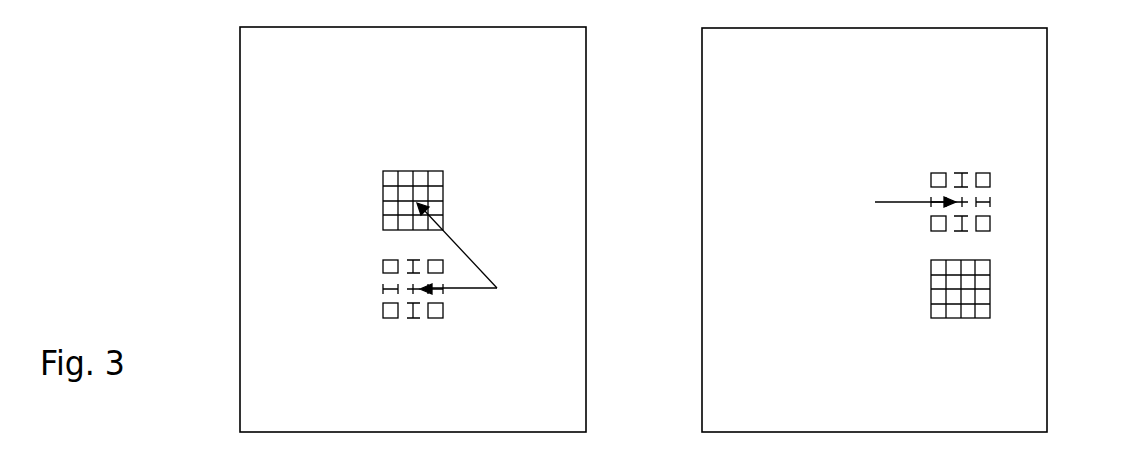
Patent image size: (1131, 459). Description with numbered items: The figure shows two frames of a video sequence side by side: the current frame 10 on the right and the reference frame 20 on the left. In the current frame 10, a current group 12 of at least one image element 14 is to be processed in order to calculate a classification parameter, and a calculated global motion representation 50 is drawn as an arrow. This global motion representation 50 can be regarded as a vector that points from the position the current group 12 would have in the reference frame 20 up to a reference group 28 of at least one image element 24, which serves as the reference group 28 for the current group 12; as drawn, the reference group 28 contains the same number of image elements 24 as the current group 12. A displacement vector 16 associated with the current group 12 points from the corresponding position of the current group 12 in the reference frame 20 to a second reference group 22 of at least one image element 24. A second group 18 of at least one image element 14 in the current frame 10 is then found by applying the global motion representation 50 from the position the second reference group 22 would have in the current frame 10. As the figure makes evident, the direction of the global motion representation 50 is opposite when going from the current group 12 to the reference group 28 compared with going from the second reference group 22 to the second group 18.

The current frame 10 is at (1048, 228).
The current group 12 is at (990, 273).
The image element 14 is at (983, 178).
The displacement vector 16 is at (453, 248).
The second group 18 is at (962, 172).
The reference frame 20 is at (240, 232).
The second reference group 22 is at (384, 222).
The image element 24 is at (391, 183).
The reference group 28 is at (384, 289).
The global motion representation 50 is at (457, 289).